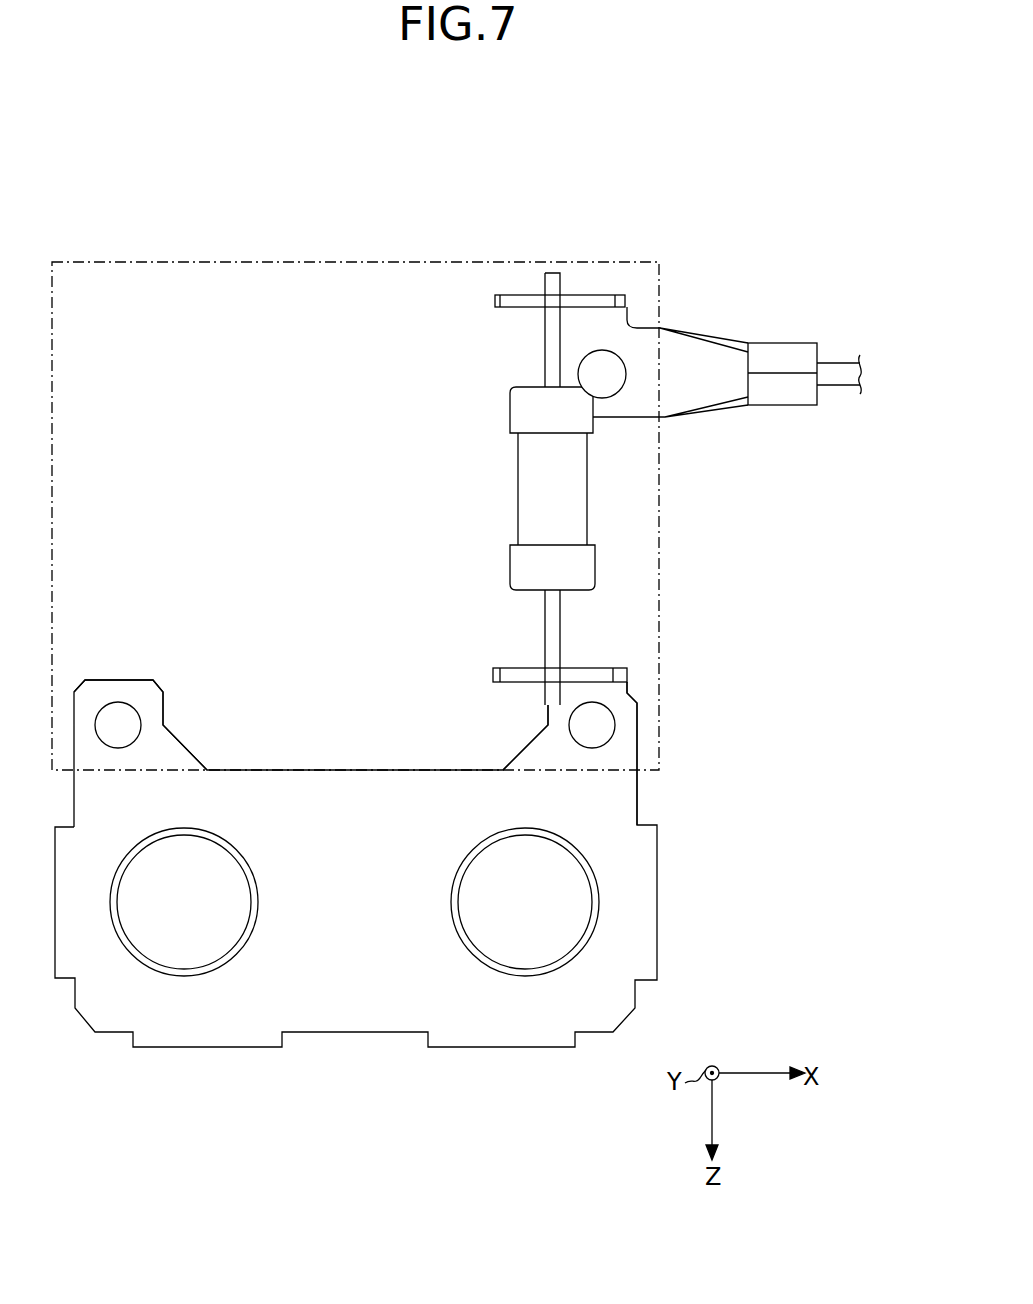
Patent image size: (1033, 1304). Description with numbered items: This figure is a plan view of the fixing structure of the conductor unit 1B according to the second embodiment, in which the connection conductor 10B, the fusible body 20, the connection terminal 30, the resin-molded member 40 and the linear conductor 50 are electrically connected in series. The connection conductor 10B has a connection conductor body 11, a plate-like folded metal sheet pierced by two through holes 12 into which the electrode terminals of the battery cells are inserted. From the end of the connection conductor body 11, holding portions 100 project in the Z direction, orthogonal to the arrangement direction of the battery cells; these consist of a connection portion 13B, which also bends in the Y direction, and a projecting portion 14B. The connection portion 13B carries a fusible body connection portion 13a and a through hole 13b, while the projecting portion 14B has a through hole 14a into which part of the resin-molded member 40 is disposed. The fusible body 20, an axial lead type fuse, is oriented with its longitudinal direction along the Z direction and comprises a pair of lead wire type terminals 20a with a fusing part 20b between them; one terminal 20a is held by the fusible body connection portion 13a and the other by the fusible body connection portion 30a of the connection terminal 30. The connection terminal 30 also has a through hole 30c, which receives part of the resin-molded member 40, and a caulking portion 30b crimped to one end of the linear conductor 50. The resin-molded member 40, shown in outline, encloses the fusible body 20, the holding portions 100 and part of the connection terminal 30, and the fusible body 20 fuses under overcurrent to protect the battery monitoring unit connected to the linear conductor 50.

The conductor unit 1B is at (172, 141).
The connection conductor 10B is at (441, 852).
The connection conductor body 11 is at (348, 970).
The through hole 12 is at (184, 972).
The fusible body connection portion 13a is at (520, 676).
The through hole 13b is at (610, 707).
The connection portion 13B is at (665, 753).
The through hole 14a is at (141, 716).
The projecting portion 14B is at (168, 686).
The holding portion 100 is at (450, 714).
The fusible body 20 is at (488, 489).
The terminal 20a is at (553, 335).
The fusing part 20b is at (510, 488).
The connection terminal 30 is at (653, 285).
The fusible body connection portion 30a is at (521, 302).
The caulking portion 30b is at (782, 358).
The through hole 30c is at (621, 294).
The resin-molded member 40 is at (263, 262).
The linear conductor 50 is at (836, 372).